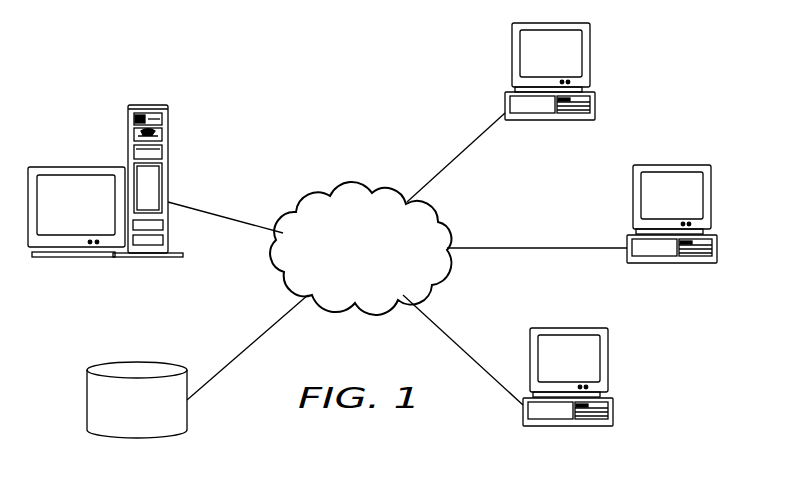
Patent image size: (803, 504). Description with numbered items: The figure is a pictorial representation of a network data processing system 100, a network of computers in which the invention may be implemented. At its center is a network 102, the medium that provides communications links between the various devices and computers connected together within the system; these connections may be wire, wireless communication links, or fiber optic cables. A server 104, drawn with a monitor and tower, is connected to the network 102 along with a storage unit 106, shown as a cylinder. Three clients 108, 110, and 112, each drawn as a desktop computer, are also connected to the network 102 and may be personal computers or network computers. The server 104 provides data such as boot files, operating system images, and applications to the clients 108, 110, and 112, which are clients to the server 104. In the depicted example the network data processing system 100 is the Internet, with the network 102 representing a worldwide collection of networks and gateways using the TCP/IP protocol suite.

The network data processing system 100 is at (302, 94).
The network 102 is at (379, 274).
The server 104 is at (128, 125).
The storage unit 106 is at (87, 400).
The client 108 is at (590, 63).
The client 110 is at (711, 205).
The client 112 is at (608, 363).